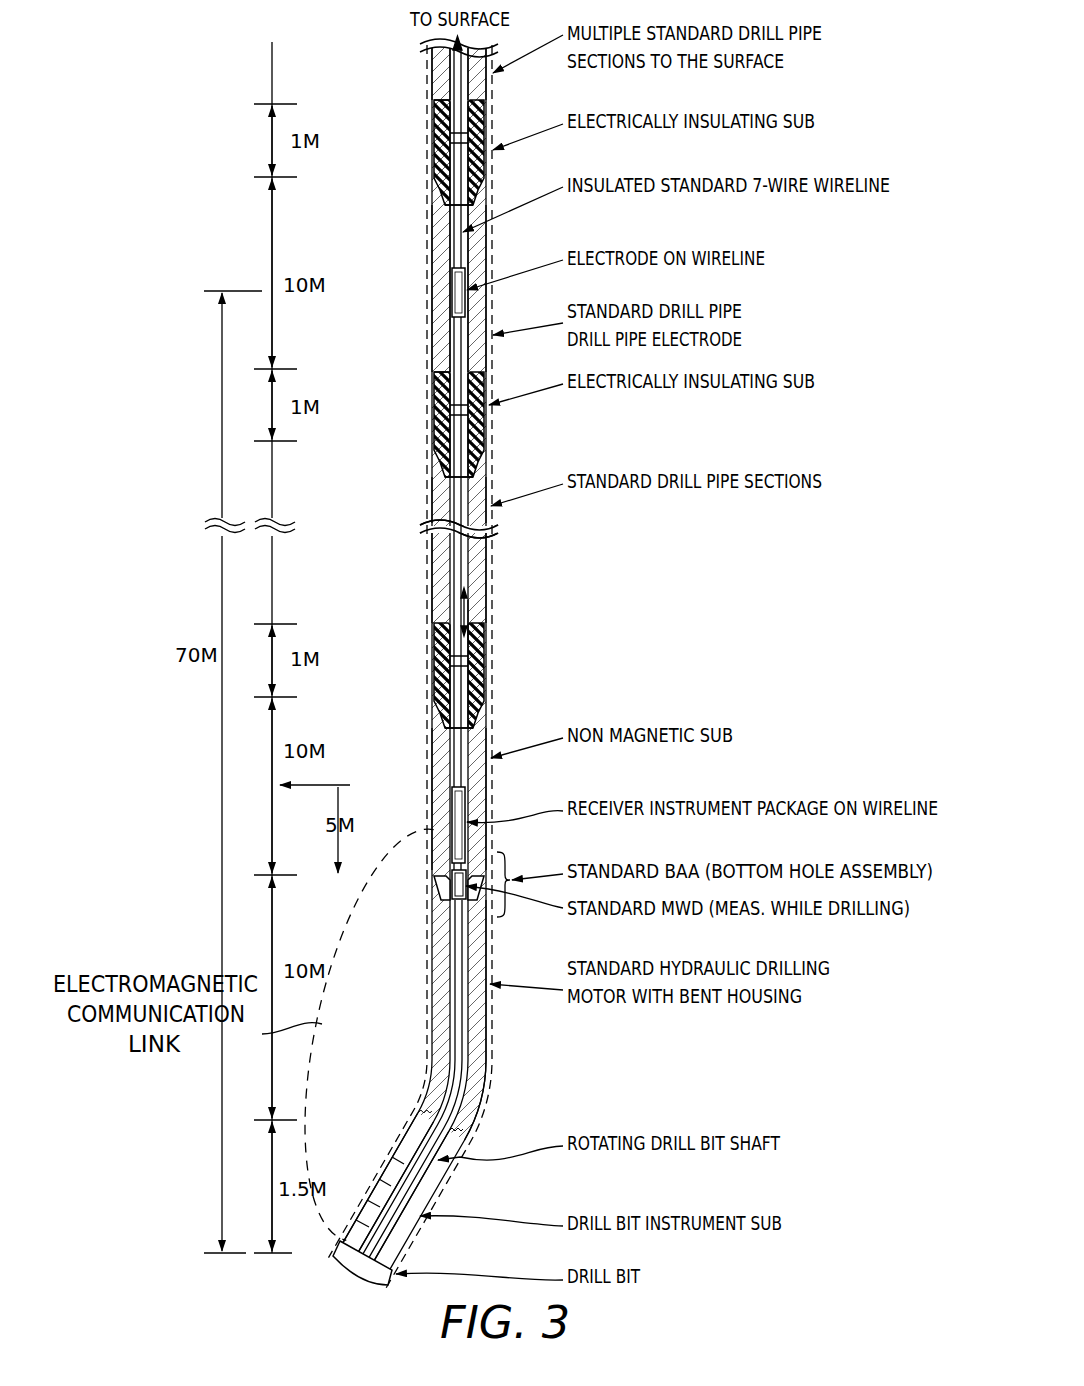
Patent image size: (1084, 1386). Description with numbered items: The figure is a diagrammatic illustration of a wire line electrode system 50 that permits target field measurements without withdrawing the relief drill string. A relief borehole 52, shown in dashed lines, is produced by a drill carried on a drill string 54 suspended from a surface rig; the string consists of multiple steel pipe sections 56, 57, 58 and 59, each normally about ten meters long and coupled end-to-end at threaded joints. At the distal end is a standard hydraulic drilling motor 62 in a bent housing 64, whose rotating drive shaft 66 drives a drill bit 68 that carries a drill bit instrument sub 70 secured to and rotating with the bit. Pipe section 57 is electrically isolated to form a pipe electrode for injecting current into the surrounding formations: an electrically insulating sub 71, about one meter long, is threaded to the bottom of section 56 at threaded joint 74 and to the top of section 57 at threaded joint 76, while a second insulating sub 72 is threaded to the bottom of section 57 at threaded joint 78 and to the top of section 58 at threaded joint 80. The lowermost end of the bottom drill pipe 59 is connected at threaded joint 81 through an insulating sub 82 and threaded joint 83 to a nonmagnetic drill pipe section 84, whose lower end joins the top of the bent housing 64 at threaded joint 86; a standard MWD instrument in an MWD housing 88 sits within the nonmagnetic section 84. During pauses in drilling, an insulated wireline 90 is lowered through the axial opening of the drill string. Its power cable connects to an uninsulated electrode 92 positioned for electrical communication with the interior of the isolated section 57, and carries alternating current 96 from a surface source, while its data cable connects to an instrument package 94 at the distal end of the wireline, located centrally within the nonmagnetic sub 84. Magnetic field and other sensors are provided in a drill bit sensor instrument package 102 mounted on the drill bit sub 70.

The wire line electrode system 50 is at (555, 458).
The relief borehole 52 is at (428, 236).
The drill string 54 is at (436, 262).
The standard steel pipe section 56 is at (440, 72).
The drill pipe electrode section 57 is at (450, 292).
The drill pipe section 58 is at (432, 506).
The bottom drill pipe 59 is at (432, 598).
The hydraulic drilling motor 62 is at (454, 954).
The bent housing 64 is at (480, 1048).
The rotating drive shaft 66 is at (418, 1140).
The drill bit 68 is at (350, 1262).
The drill bit instrument sub 70 is at (378, 1202).
The electrically insulating sub 71 is at (438, 156).
The second electrically insulating sub 72 is at (438, 410).
The threaded joint 74 is at (446, 101).
The threaded joint 76 is at (440, 187).
The threaded joint 78 is at (444, 376).
The threaded joint 80 is at (440, 462).
The threaded joint 81 is at (470, 624).
The electrically insulating sub 82 is at (438, 646).
The threaded joint 83 is at (440, 708).
The nonmagnetic drill pipe section 84 is at (445, 748).
The threaded joint 86 is at (440, 896).
The MWD housing 88 is at (456, 882).
The wireline 90 is at (452, 50).
The electrode 92 is at (446, 312).
The instrument package 94 is at (450, 804).
The alternating current 96 is at (468, 598).
The drill bit sensor instrument package 102 is at (420, 1218).